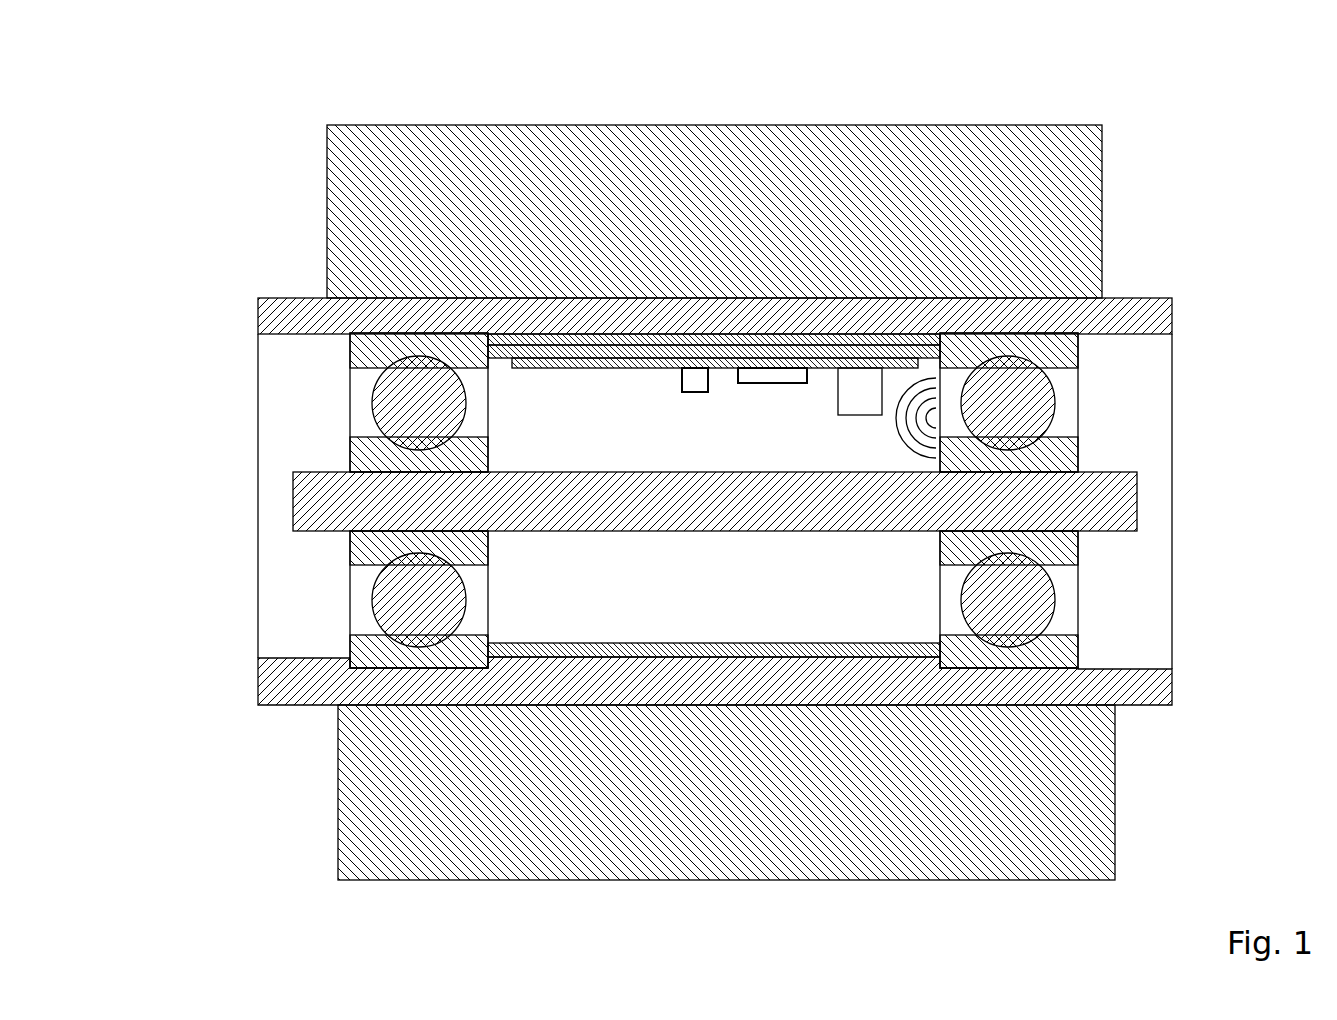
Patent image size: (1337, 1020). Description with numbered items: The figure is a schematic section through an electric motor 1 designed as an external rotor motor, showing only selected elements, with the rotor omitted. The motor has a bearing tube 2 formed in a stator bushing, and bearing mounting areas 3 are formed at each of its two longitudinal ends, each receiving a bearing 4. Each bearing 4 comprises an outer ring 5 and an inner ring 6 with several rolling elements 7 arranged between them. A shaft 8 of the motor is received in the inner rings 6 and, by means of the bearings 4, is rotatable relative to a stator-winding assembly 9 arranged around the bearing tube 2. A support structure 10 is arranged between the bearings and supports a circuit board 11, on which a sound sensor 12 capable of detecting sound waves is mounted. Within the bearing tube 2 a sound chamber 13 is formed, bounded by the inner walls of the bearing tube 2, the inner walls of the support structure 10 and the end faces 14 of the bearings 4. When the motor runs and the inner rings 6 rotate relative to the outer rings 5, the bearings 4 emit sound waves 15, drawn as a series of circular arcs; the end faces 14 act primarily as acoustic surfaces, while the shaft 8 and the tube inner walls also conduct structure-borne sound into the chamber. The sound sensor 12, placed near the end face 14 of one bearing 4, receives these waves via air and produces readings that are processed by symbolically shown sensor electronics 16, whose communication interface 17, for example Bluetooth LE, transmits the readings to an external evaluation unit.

The electric motor 1 is at (189, 132).
The bearing tube 2 is at (1152, 305).
The bearing mounting areas 3 is at (707, 447).
The bearing 4 is at (357, 386).
The outer ring 5 is at (352, 357).
The inner ring 6 is at (363, 458).
The rolling elements 7 is at (453, 415).
The shaft 8 is at (300, 520).
The stator-winding assembly 9 is at (556, 136).
The support structure 10 is at (712, 348).
The circuit board 11 is at (657, 363).
The sound sensor 12 is at (850, 385).
The sound chamber 13 is at (636, 452).
The end faces 14 is at (930, 545).
The sound waves 15 is at (900, 427).
The sensor electronics 16 is at (770, 377).
The communication interface 17 is at (695, 382).